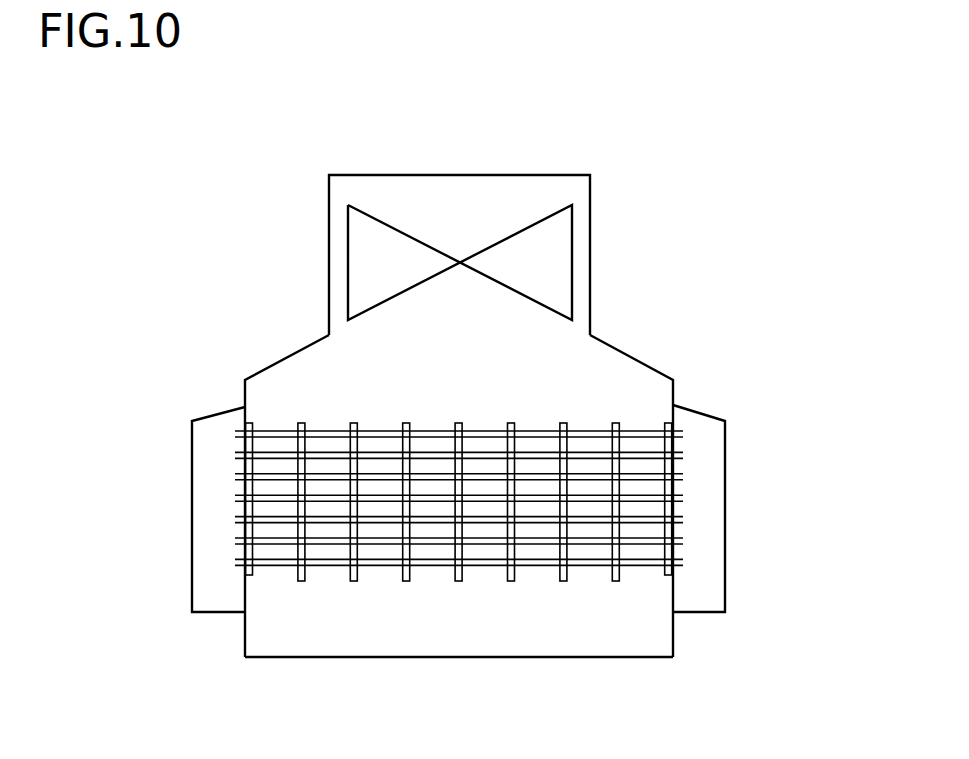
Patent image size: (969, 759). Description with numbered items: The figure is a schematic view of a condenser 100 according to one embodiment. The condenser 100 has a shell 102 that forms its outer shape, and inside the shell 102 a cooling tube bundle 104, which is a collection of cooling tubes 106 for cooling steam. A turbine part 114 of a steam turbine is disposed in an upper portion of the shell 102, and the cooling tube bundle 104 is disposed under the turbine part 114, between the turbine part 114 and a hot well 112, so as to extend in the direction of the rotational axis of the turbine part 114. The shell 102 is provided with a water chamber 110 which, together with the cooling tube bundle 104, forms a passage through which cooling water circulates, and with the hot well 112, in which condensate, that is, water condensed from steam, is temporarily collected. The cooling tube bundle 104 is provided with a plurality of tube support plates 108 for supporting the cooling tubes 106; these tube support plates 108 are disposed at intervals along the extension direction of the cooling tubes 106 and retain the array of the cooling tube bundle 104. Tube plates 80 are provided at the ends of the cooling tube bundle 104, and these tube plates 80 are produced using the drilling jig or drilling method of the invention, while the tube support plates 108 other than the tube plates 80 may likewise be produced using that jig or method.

The condenser 100 is at (672, 192).
The shell 102 is at (444, 515).
The cooling tube bundle 104 is at (459, 529).
The cooling tube 106 is at (437, 566).
The tube support plate 108 is at (353, 582).
The tube plate 80 is at (250, 577).
The water chamber 110 is at (593, 657).
The hot well 112 is at (728, 462).
The turbine part 114 is at (572, 262).